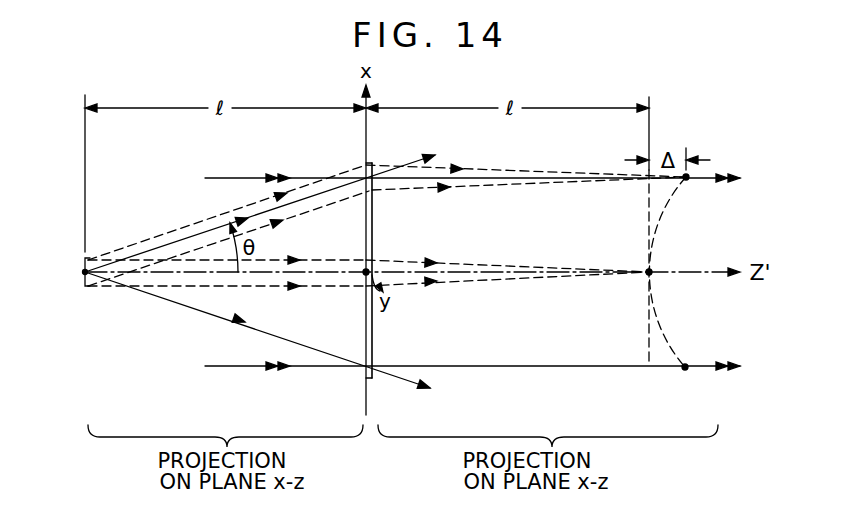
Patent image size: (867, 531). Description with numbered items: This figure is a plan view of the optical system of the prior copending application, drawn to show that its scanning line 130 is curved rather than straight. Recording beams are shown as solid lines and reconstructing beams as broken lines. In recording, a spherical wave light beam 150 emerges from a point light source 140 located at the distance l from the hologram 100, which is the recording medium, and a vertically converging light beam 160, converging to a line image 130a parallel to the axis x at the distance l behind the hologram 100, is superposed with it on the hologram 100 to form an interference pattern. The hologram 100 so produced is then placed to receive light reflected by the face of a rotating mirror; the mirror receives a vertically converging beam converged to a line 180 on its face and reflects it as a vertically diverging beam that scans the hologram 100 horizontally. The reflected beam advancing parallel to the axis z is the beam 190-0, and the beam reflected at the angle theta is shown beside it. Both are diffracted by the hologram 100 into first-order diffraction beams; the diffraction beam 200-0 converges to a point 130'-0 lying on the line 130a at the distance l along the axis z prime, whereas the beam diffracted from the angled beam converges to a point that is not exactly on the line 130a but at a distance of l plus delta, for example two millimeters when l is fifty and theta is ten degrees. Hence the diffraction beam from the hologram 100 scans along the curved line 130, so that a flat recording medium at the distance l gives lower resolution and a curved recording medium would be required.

The hologram 100 is at (372, 235).
The scanning line 130 is at (688, 272).
The line image 130a is at (649, 200).
The convergence point of diffraction beam 200-0 130'-0 is at (617, 319).
The point light source 140 is at (85, 277).
The spherical wave light beam 150 is at (187, 240).
The vertically converging light beam 160 is at (243, 186).
The line on the face of the mirror 180 is at (85, 268).
The light beam reflected parallel to axis z 190-0 is at (270, 280).
The first-order diffraction beam 200-0 is at (412, 278).